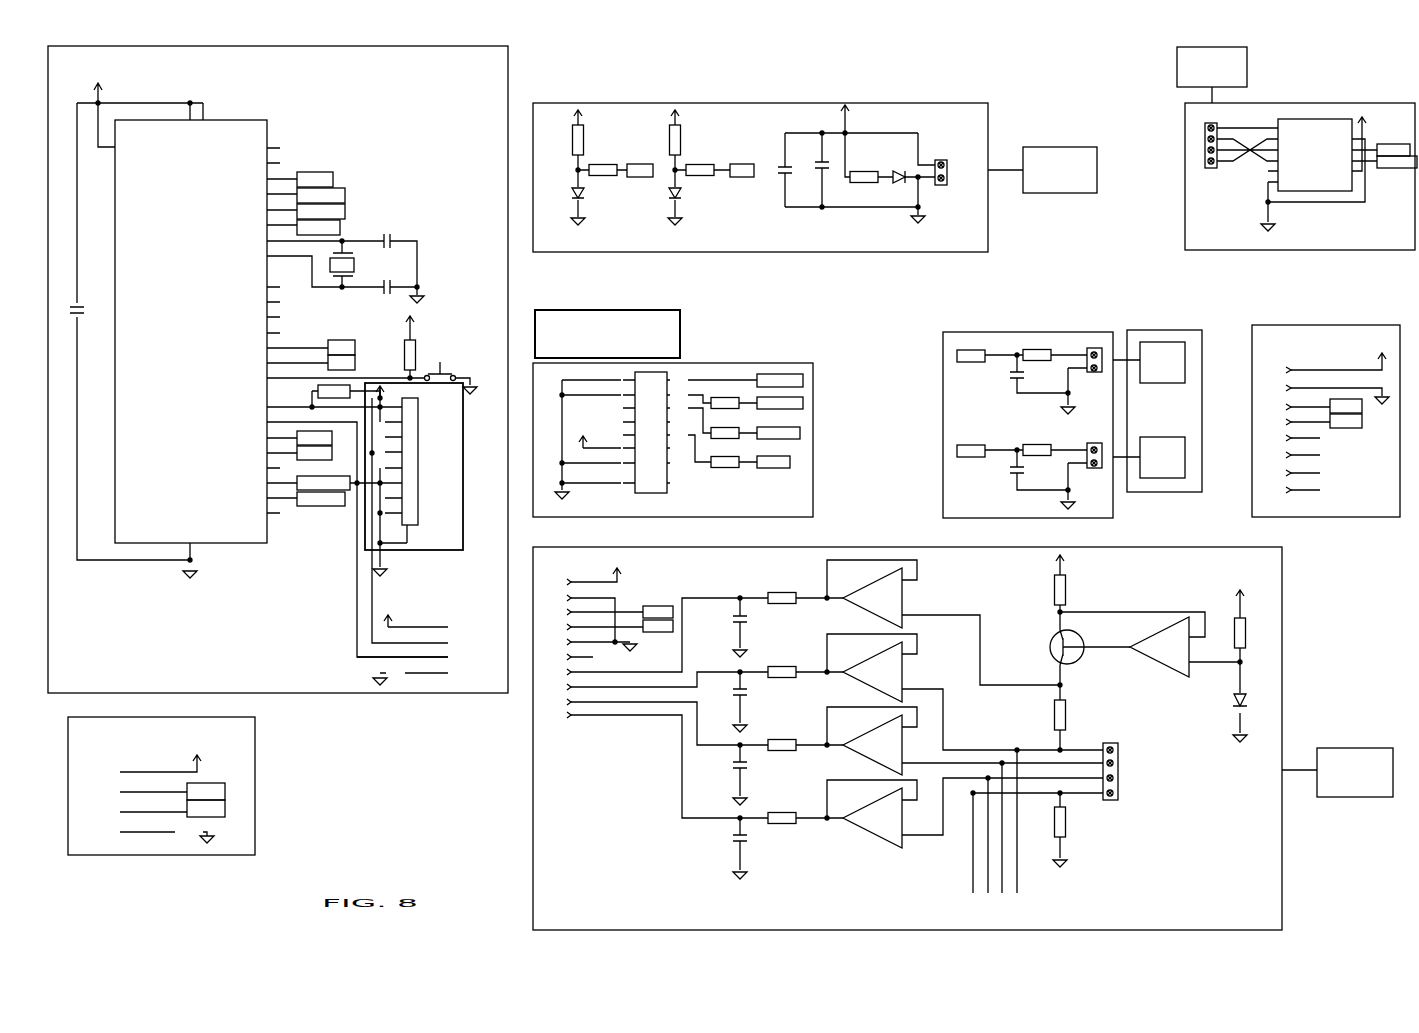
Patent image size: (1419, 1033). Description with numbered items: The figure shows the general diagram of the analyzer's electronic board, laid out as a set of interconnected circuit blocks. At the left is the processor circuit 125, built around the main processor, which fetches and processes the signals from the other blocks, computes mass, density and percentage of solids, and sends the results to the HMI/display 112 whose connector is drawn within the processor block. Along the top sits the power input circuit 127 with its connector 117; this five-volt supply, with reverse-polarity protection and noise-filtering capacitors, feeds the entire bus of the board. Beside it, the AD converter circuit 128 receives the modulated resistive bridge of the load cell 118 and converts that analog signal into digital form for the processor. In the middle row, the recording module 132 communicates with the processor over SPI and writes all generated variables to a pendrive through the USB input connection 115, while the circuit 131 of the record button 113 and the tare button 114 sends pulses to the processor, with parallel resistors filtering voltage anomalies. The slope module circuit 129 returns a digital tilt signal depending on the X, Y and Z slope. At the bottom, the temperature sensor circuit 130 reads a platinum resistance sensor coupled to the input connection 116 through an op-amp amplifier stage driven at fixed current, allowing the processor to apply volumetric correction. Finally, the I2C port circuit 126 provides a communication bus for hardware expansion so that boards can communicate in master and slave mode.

The processor circuit 125 is at (278, 369).
The HMI/display 112 is at (409, 513).
The power input circuit 127 is at (760, 177).
The connector 117 is at (1060, 170).
The load cell 118 is at (1212, 67).
The AD converter circuit 128 is at (1302, 176).
The USB input connection 115 is at (607, 334).
The recording module 132 is at (673, 440).
The record button and tare button circuit 131 is at (1028, 425).
The tare button 114 is at (1162, 362).
The record button 113 is at (1162, 457).
The slope module circuit 129 is at (1326, 421).
The temperature sensor circuit 130 is at (907, 738).
The input connection 116 is at (1355, 772).
The I2C port circuit 126 is at (161, 786).